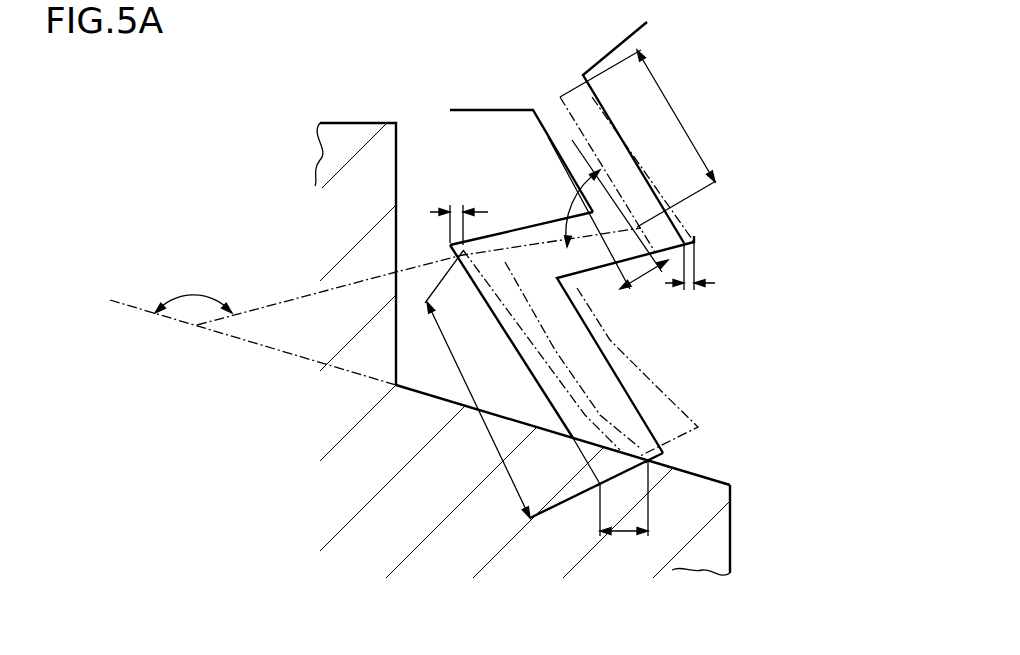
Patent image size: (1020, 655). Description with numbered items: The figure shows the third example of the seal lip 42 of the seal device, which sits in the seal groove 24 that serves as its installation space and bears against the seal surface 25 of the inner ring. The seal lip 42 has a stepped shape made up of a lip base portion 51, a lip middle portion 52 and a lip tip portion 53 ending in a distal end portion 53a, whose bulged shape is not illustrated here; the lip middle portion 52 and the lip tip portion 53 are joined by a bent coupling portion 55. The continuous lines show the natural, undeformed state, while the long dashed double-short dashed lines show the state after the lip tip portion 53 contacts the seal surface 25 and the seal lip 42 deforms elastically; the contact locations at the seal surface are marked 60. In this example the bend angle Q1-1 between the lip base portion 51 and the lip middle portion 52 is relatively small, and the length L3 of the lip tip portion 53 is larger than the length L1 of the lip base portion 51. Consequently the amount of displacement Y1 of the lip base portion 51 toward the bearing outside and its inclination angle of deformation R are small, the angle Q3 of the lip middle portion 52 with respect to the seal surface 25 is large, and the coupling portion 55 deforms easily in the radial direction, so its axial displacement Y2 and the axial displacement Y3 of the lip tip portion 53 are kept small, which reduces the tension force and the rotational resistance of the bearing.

The seal groove 24 is at (697, 450).
The seal surface 25 is at (724, 484).
The seal lip 42 is at (637, 153).
The lip base portion 51 is at (549, 137).
The lip middle portion 52 is at (510, 231).
The lip tip portion 53 is at (648, 406).
The distal end portion 53a is at (604, 482).
The coupling portion 55 is at (492, 258).
The contact point 60 is at (600, 486).
The amount of displacement of the lip base portion Y1 is at (698, 266).
The amount of displacement of the coupling portion Y2 is at (446, 212).
The amount of displacement of the lip tip portion Y3 is at (624, 513).
The length of the lip base portion L1 is at (638, 138).
The length of the lip tip portion L3 is at (477, 384).
The angle of deformation of the lip base portion R is at (608, 227).
The angle of the lip middle portion with respect to the seal surface Q3 is at (193, 288).
The bend angle Q1-1 is at (556, 208).